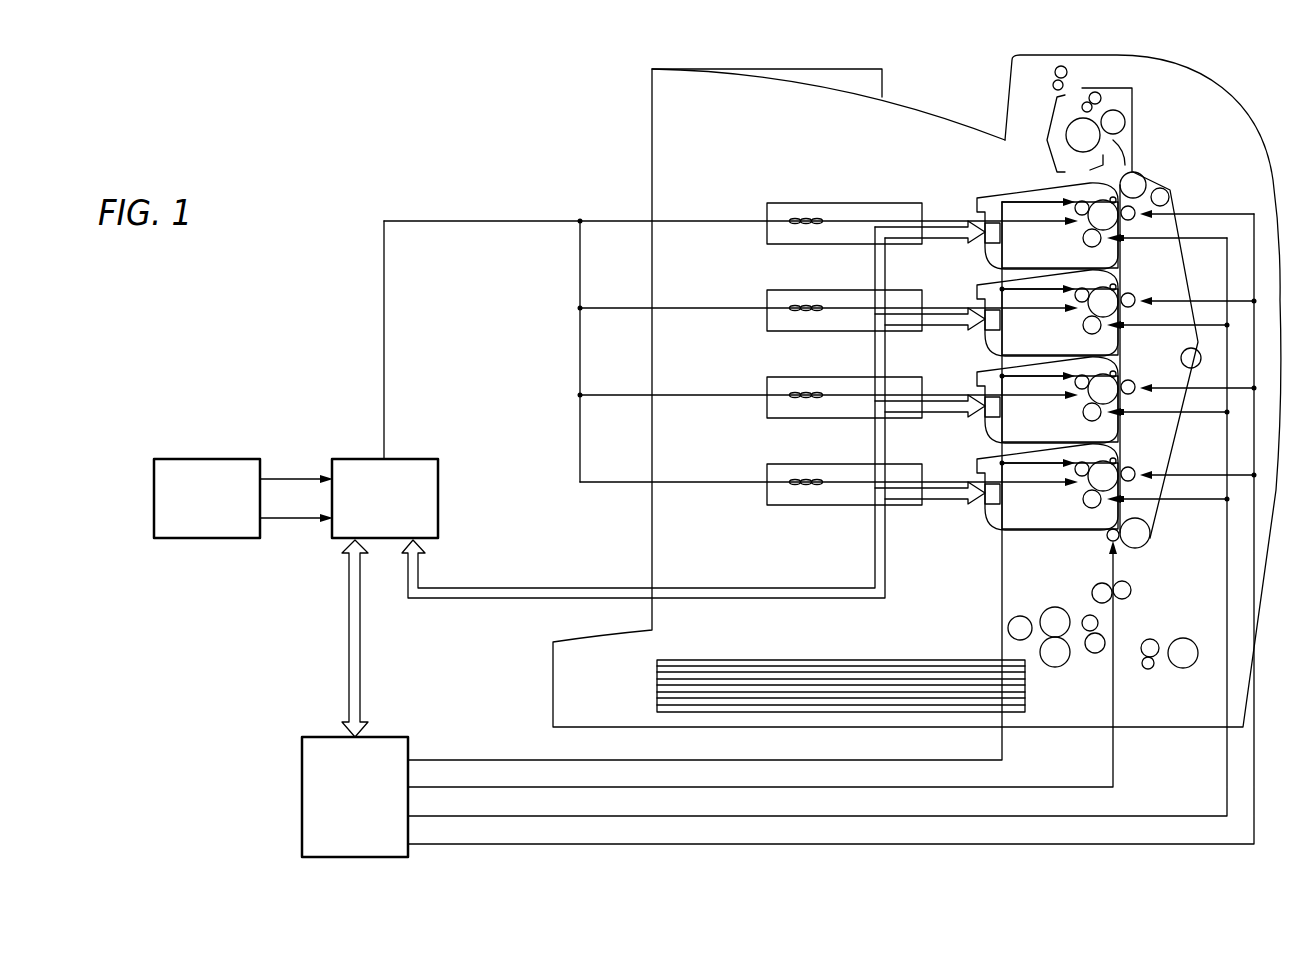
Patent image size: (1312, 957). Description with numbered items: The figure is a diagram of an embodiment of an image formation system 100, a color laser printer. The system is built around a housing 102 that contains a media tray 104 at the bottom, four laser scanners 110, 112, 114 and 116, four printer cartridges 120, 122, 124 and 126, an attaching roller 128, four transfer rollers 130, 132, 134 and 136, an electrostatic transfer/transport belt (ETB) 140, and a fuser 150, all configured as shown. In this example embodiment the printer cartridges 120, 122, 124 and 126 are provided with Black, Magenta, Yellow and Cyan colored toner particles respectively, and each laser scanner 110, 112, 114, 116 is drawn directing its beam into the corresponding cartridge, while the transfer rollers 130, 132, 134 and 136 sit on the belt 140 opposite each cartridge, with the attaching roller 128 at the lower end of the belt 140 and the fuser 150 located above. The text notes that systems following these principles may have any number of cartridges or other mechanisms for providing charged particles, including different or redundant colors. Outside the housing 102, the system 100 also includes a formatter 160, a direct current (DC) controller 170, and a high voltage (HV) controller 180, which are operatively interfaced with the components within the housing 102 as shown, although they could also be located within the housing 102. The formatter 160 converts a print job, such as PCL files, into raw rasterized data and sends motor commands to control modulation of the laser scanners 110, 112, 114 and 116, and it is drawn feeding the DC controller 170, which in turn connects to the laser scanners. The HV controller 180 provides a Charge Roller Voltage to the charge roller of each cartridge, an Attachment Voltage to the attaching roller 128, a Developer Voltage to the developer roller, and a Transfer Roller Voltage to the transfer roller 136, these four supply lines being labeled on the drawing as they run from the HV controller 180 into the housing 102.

The image formation system 100 is at (350, 140).
The housing 102 is at (650, 147).
The media tray 104 is at (830, 648).
The laser scanner 110 is at (768, 203).
The laser scanner 112 is at (829, 297).
The laser scanner 114 is at (829, 384).
The laser scanner 116 is at (829, 471).
The printer cartridge 120 is at (990, 196).
The printer cartridge 122 is at (1091, 307).
The printer cartridge 124 is at (1091, 394).
The printer cartridge 126 is at (1091, 481).
The attaching roller 128 is at (1107, 538).
The transfer roller 130 is at (1127, 222).
The transfer roller 132 is at (1138, 312).
The transfer roller 134 is at (1137, 397).
The transfer roller 136 is at (1137, 483).
The electrostatic transfer/transport belt 140 is at (1183, 425).
The fuser 150 is at (1133, 128).
The formatter 160 is at (206, 459).
The DC controller 170 is at (358, 459).
The HV controller 180 is at (302, 797).